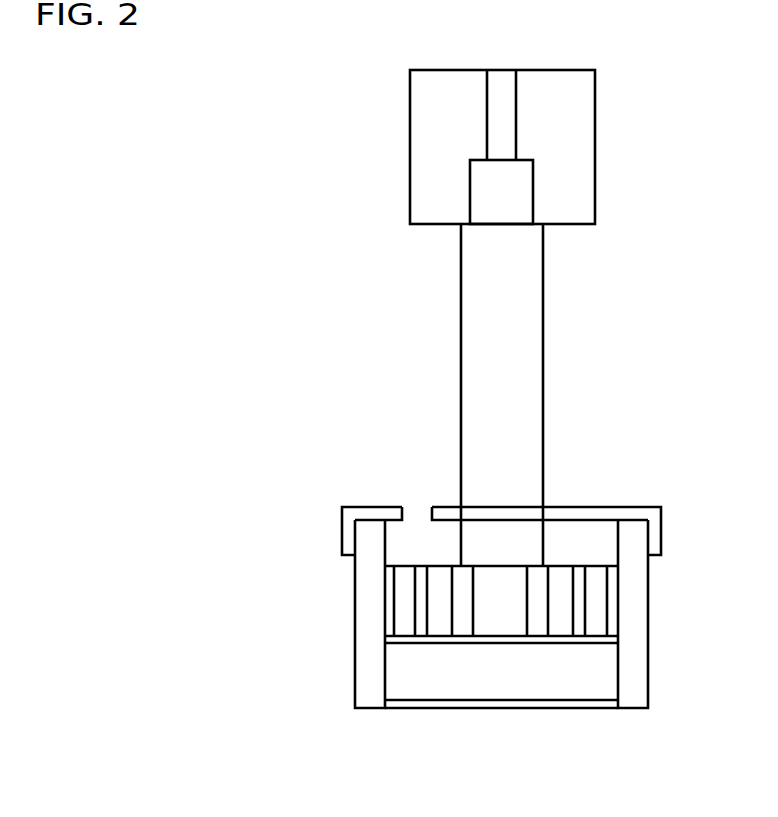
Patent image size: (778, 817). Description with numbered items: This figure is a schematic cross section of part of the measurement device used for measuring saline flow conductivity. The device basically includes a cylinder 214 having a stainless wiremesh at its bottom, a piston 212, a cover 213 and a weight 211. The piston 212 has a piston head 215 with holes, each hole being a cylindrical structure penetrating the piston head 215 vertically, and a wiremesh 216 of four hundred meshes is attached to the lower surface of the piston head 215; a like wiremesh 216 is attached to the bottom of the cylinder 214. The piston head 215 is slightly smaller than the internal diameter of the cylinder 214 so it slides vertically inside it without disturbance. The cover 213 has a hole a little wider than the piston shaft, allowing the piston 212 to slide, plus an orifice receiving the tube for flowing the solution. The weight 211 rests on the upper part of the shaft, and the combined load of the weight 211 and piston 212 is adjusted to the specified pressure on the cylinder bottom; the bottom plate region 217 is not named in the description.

The weight 211 is at (597, 120).
The piston 212 is at (543, 310).
The cover 213 is at (615, 507).
The cylinder 214 is at (650, 633).
The piston head 215 is at (589, 566).
The wiremesh 216 is at (507, 643).
The base plate 217 is at (603, 690).